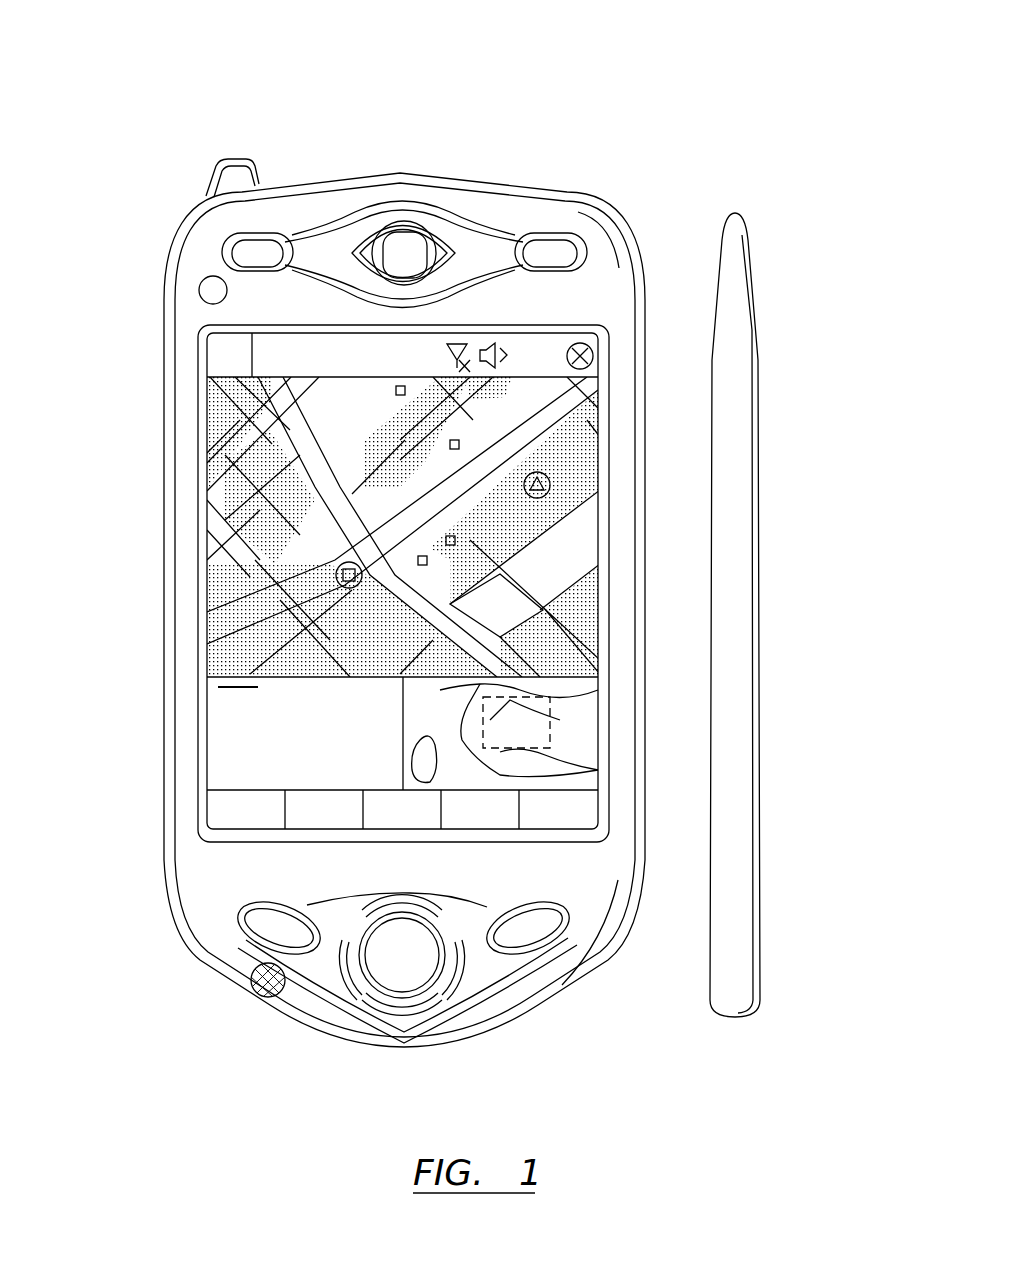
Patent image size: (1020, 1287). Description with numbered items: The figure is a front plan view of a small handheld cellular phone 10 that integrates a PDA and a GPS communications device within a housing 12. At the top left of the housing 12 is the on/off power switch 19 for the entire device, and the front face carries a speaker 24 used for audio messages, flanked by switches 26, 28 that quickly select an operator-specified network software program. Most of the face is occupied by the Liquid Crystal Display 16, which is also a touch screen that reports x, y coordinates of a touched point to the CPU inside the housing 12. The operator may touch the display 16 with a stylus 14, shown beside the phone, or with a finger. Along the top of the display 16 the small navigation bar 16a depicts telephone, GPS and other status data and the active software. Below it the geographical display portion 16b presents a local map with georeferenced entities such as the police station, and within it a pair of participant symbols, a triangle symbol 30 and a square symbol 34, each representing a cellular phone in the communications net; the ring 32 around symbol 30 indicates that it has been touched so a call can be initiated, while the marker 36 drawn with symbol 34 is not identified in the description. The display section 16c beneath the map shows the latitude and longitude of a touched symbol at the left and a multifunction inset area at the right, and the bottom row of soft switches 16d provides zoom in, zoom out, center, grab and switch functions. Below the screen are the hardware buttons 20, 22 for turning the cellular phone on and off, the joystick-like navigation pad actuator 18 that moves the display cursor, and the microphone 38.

The cellular phone 10 is at (627, 117).
The housing 12 is at (160, 645).
The stylus 14 is at (760, 432).
The display 16 is at (572, 327).
The navigation bar 16a is at (248, 356).
The geographical display portion 16b is at (215, 512).
The display section 16c is at (216, 736).
The soft switches 16d is at (207, 824).
The navigation pad actuator 18 is at (400, 967).
The on/off power switch 19 is at (232, 160).
The cellular phone hardware activating button 20 is at (517, 940).
The cellular phone hardware activating button 22 is at (272, 958).
The speaker 24 is at (404, 253).
The switch 26 is at (548, 252).
The switch 28 is at (260, 250).
The symbol 30 is at (549, 482).
The ring 32 is at (550, 492).
The symbol 34 is at (336, 576).
The square symbol 36 is at (341, 582).
The microphone 38 is at (268, 997).